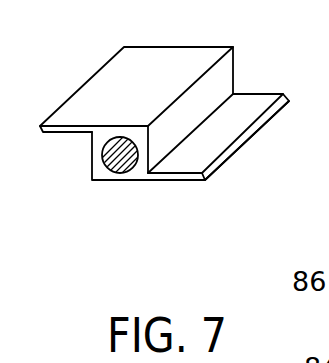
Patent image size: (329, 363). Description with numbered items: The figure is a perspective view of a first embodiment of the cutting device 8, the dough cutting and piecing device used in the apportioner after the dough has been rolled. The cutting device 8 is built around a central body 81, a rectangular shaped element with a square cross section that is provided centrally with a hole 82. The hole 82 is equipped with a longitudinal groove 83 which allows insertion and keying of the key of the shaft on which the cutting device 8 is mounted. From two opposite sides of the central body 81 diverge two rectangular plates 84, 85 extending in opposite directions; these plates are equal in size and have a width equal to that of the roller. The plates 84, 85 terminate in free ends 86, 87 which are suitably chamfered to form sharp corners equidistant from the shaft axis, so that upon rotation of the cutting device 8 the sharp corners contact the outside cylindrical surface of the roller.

The cutting device 8 is at (164, 126).
The central body 81 is at (104, 170).
The hole 82 is at (123, 157).
The longitudinal groove 83 is at (133, 168).
The rectangular plate 84 is at (70, 136).
The rectangular plate 85 is at (243, 111).
The free end 86 is at (77, 90).
The free end 87 is at (246, 145).